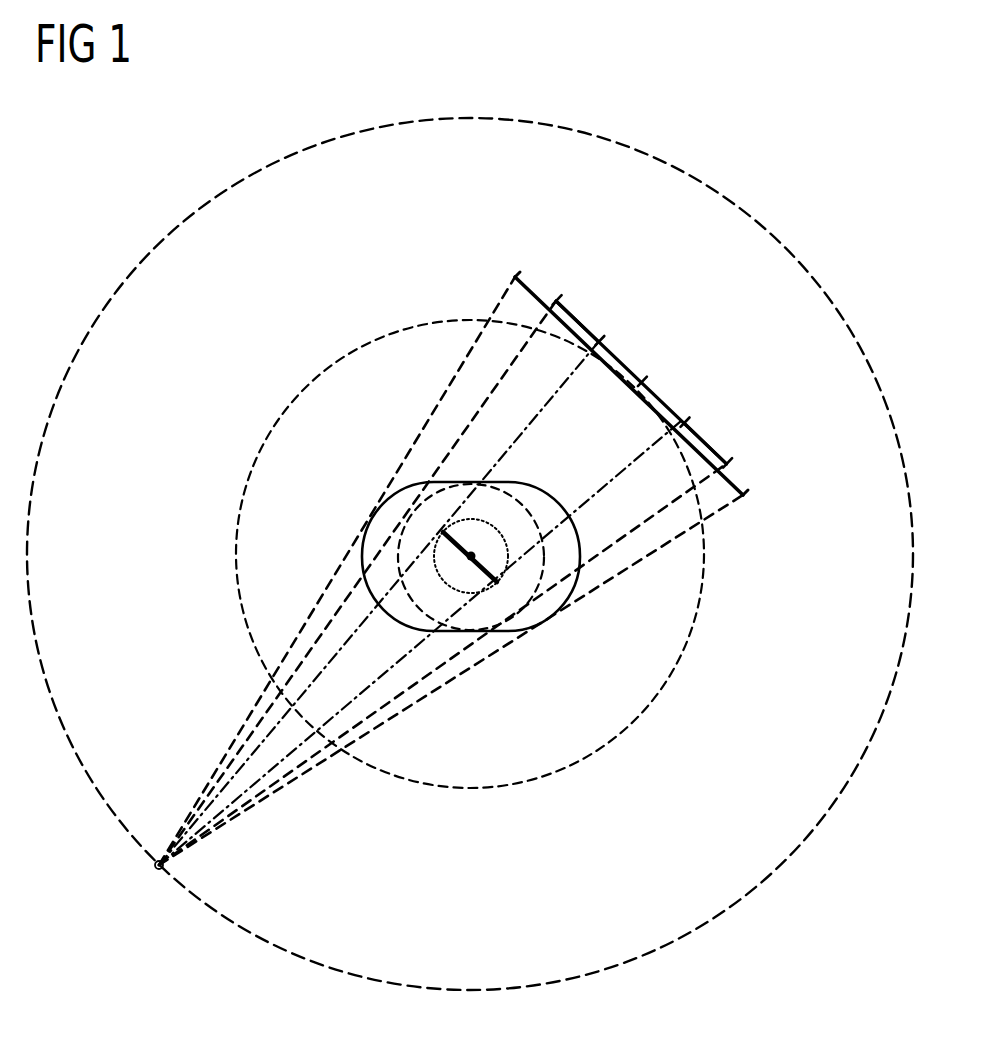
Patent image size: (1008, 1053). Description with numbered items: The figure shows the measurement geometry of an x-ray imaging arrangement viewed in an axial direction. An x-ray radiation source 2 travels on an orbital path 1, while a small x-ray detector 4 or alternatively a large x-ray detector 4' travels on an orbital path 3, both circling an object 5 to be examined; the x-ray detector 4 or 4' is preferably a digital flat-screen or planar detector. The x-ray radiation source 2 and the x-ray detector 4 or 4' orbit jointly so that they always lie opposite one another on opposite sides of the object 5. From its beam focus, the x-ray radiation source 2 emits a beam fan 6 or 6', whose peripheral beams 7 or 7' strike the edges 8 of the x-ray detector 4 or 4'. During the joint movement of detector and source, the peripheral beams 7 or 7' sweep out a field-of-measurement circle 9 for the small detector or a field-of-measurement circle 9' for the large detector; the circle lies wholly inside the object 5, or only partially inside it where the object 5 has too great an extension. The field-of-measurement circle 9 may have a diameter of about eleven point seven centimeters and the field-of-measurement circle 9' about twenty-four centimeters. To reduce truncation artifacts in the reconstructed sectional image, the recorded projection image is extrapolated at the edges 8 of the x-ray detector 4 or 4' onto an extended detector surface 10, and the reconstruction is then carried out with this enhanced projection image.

The orbital path 1 is at (125, 285).
The x-ray radiation source 2 is at (156, 867).
The orbital path 3 is at (292, 400).
The small x-ray detector 4 is at (641, 382).
The large x-ray detector 4' is at (671, 365).
The object 5 is at (380, 520).
The beam fan 6 is at (451, 680).
The beam fan 6' is at (337, 571).
The peripheral beams 7 is at (443, 567).
The peripheral beams 7' is at (357, 574).
The edges 8 is at (557, 301).
The field-of-measurement circle 9 is at (476, 614).
The field-of-measurement circle 9' is at (506, 576).
The extended detector surface 10 is at (528, 288).